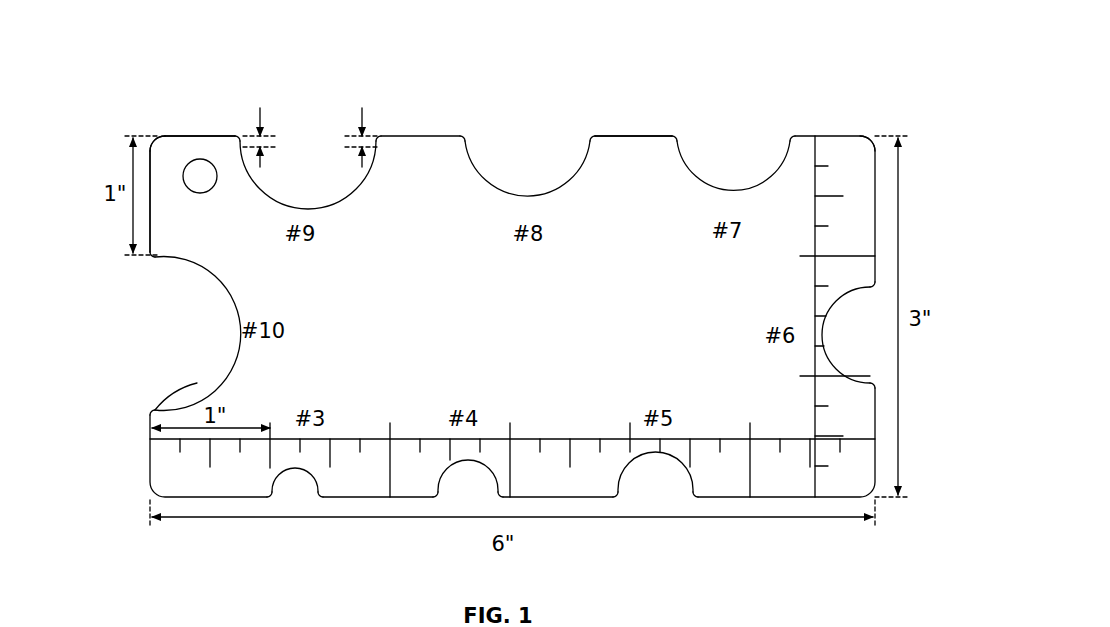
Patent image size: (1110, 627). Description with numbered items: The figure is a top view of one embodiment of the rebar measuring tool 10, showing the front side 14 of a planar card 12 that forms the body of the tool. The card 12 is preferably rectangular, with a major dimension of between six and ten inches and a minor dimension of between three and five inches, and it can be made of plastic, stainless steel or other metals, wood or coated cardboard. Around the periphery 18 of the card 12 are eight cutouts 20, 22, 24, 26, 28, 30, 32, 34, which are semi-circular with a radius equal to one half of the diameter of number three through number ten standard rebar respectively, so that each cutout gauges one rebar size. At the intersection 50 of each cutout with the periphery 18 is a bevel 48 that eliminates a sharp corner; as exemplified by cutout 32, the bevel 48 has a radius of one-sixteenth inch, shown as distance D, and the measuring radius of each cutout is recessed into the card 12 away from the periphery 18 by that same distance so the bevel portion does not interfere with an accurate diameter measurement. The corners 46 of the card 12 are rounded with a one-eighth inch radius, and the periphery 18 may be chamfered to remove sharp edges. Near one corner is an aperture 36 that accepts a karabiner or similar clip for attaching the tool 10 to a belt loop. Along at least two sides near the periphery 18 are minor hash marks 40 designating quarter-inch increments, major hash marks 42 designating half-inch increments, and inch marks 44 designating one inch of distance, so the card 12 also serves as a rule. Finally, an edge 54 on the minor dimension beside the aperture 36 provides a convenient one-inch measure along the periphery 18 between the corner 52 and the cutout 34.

The rebar measuring tool 10 is at (147, 57).
The planar card 12 is at (176, 136).
The front side 14 is at (371, 350).
The periphery 18 is at (633, 136).
The cutout 20 is at (297, 470).
The cutout 22 is at (468, 463).
The cutout 24 is at (657, 455).
The cutout 26 is at (833, 305).
The cutout 28 is at (740, 196).
The cutout 30 is at (530, 203).
The cutout 32 is at (308, 207).
The cutout 34 is at (237, 325).
The aperture 36 is at (200, 158).
The minor hash marks 40 is at (823, 167).
The major hash marks 42 is at (838, 196).
The inch marks 44 is at (866, 250).
The corners 46 is at (872, 133).
The bevel 48 is at (237, 135).
The intersection 50 is at (263, 121).
The corner 52 is at (153, 155).
The edge 54 is at (150, 230).